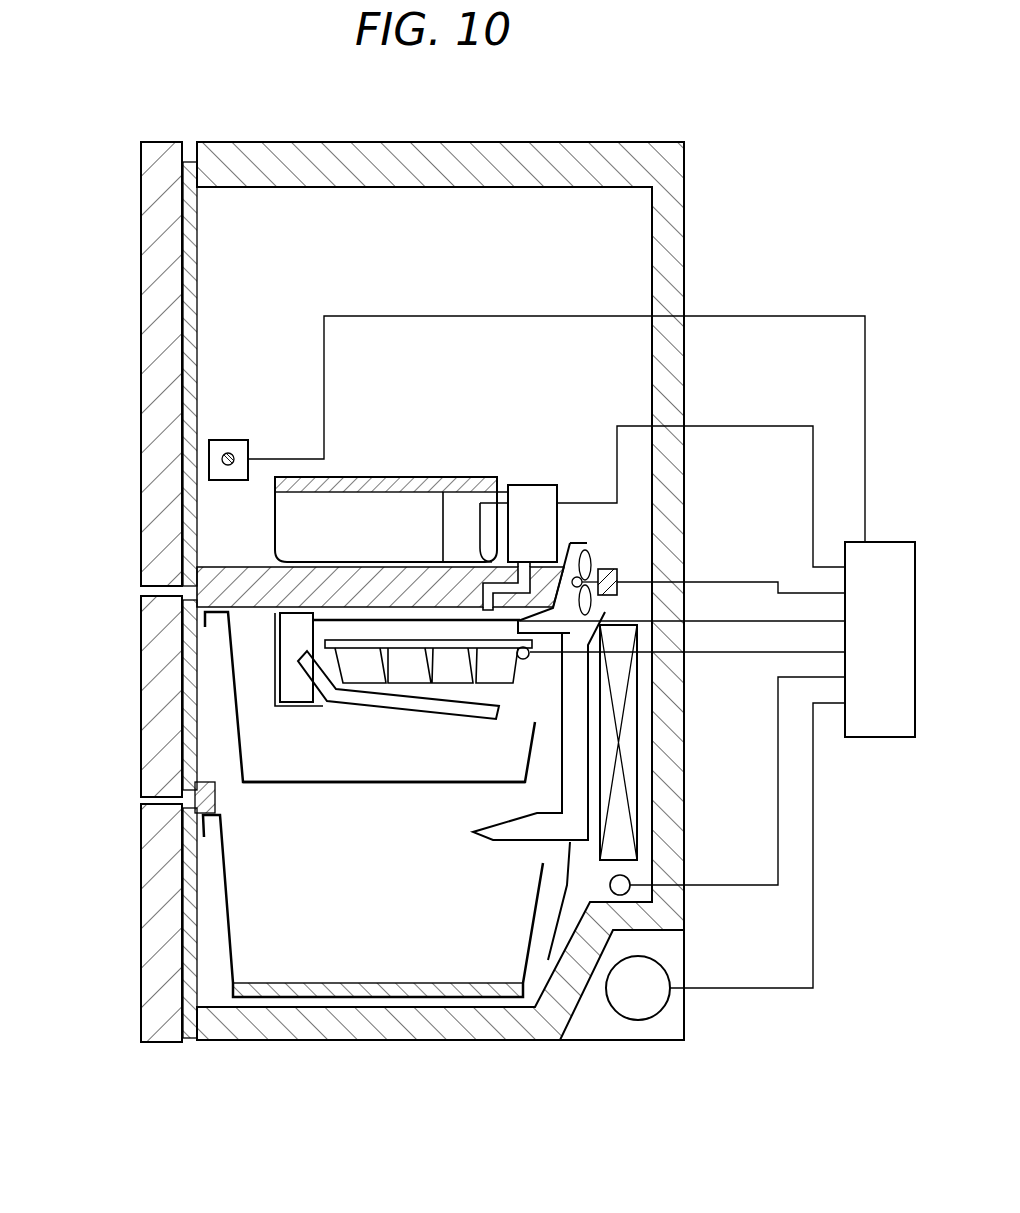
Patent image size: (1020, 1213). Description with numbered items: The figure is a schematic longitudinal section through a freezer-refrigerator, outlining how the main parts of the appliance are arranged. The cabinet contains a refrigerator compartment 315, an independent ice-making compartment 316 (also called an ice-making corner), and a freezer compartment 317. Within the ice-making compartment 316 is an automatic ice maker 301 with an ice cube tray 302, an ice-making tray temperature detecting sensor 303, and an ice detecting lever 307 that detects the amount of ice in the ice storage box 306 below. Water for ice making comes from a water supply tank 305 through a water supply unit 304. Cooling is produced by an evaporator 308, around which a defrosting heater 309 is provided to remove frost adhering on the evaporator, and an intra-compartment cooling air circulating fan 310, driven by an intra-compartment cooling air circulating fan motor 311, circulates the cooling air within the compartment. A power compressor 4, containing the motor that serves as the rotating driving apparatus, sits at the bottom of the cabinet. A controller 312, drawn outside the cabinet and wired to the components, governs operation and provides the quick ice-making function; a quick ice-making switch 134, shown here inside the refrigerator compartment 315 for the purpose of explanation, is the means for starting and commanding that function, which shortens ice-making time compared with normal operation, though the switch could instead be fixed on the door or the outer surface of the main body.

The power compressor 4 is at (653, 1005).
The quick ice-making switch 134 is at (229, 440).
The automatic ice maker 301 is at (293, 689).
The ice cube tray 302 is at (502, 673).
The ice-making tray temperature detecting sensor 303 is at (530, 656).
The water supply unit 304 is at (530, 487).
The water supply tank 305 is at (372, 478).
The ice storage box 306 is at (360, 783).
The ice detecting lever 307 is at (388, 706).
The evaporator 308 is at (623, 823).
The defrosting heater 309 is at (627, 889).
The intra-compartment cooling air circulating fan 310 is at (592, 563).
The intra-compartment cooling air circulating fan motor 311 is at (617, 578).
The controller 312 is at (880, 738).
The refrigerator compartment 315 is at (213, 308).
The independent ice-making compartment 316 is at (245, 655).
The freezer compartment 317 is at (250, 930).